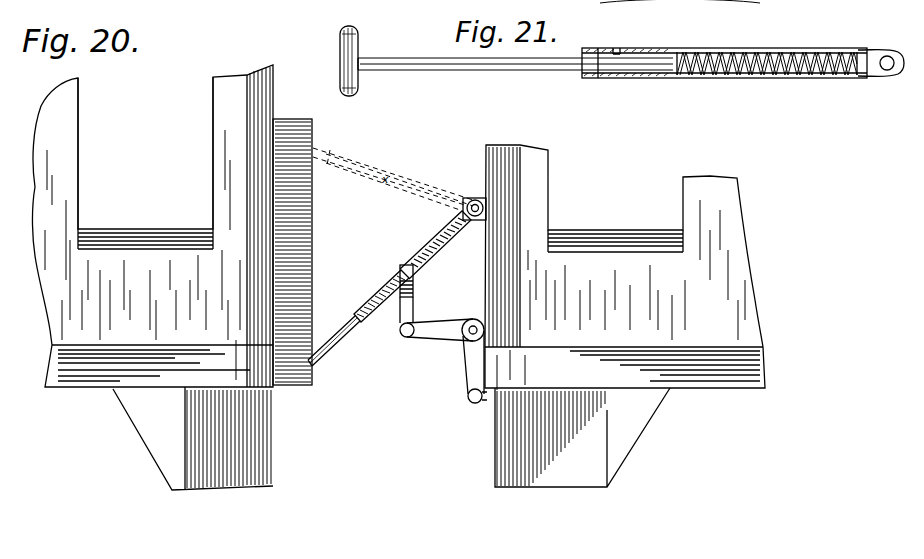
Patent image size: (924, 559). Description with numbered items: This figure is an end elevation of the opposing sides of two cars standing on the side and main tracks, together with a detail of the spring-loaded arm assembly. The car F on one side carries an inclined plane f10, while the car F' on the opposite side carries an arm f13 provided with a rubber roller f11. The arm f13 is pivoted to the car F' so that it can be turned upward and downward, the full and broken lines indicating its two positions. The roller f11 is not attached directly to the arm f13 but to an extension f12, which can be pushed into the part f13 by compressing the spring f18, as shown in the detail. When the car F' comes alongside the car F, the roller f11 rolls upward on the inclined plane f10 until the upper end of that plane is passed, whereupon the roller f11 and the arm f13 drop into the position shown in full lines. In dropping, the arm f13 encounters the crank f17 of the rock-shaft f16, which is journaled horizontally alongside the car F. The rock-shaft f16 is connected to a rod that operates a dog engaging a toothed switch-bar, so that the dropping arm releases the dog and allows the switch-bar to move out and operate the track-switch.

In FIG. 20, the car F is at (152, 277).
In FIG. 20, the car F' is at (625, 316).
In FIG. 20, the inclined plane f10 is at (338, 213).
In FIG. 21, the rubber roller f11 is at (342, 32).
In FIG. 20, the extension f12 is at (339, 311).
In FIG. 21, the extension f12 is at (424, 52).
In FIG. 20, the arm f13 is at (388, 264).
In FIG. 21, the arm f13 is at (655, 52).
In FIG. 20, the rock-shaft f16 is at (473, 318).
In FIG. 20, the crank f17 is at (445, 314).
In FIG. 21, the spring f18 is at (742, 52).